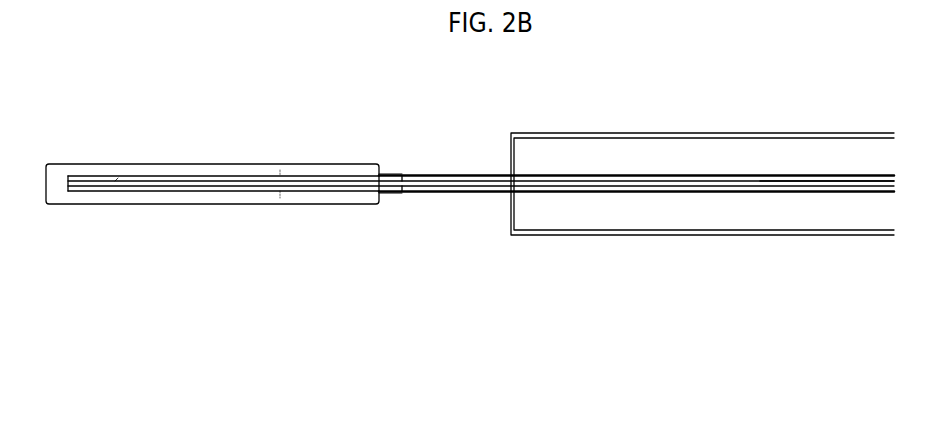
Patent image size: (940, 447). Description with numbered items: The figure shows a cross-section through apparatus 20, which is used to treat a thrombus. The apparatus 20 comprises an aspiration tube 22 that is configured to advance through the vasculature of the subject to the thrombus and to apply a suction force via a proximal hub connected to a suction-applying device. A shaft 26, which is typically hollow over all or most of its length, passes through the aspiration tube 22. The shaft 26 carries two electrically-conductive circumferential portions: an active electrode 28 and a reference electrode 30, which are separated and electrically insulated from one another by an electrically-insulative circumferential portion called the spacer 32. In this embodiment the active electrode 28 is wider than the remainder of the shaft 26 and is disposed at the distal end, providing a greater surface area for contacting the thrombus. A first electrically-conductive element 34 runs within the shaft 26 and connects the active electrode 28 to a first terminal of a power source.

The apparatus 20 is at (745, 90).
The aspiration tube 22 is at (627, 236).
The shaft 26 is at (643, 173).
The active electrode 28 is at (212, 164).
The reference electrode 30 is at (483, 175).
The spacer 32 is at (382, 175).
The first electrically-conductive element 34 is at (788, 182).